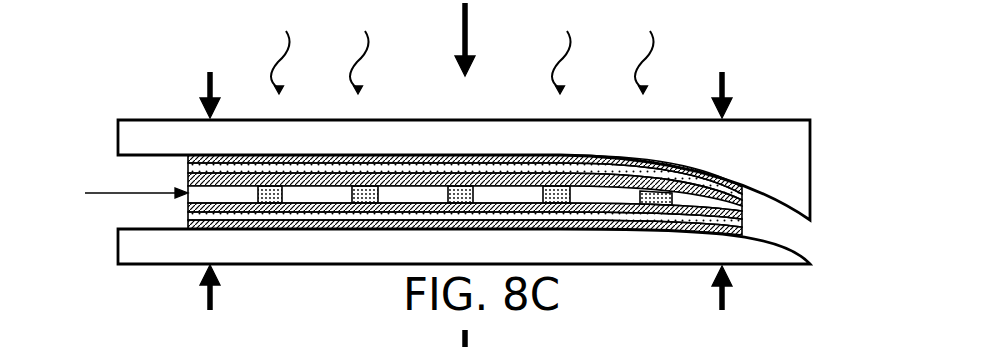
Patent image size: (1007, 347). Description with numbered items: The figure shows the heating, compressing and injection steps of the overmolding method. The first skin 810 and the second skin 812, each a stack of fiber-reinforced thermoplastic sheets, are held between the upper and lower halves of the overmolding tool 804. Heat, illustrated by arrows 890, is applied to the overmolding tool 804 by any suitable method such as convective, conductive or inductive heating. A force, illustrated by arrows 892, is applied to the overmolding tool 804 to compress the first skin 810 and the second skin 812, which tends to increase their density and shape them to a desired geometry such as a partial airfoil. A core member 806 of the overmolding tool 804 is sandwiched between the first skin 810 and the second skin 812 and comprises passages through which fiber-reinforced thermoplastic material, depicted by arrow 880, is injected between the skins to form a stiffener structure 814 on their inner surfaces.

The overmolding tool 804 is at (145, 118).
The core member 806 is at (622, 205).
The first skin 810 is at (316, 145).
The second skin 812 is at (320, 245).
The stiffener structure 814 is at (264, 176).
The injected fiber-reinforced thermoplastic material 880 is at (93, 192).
The heat 890 is at (274, 56).
The force 892 is at (724, 84).